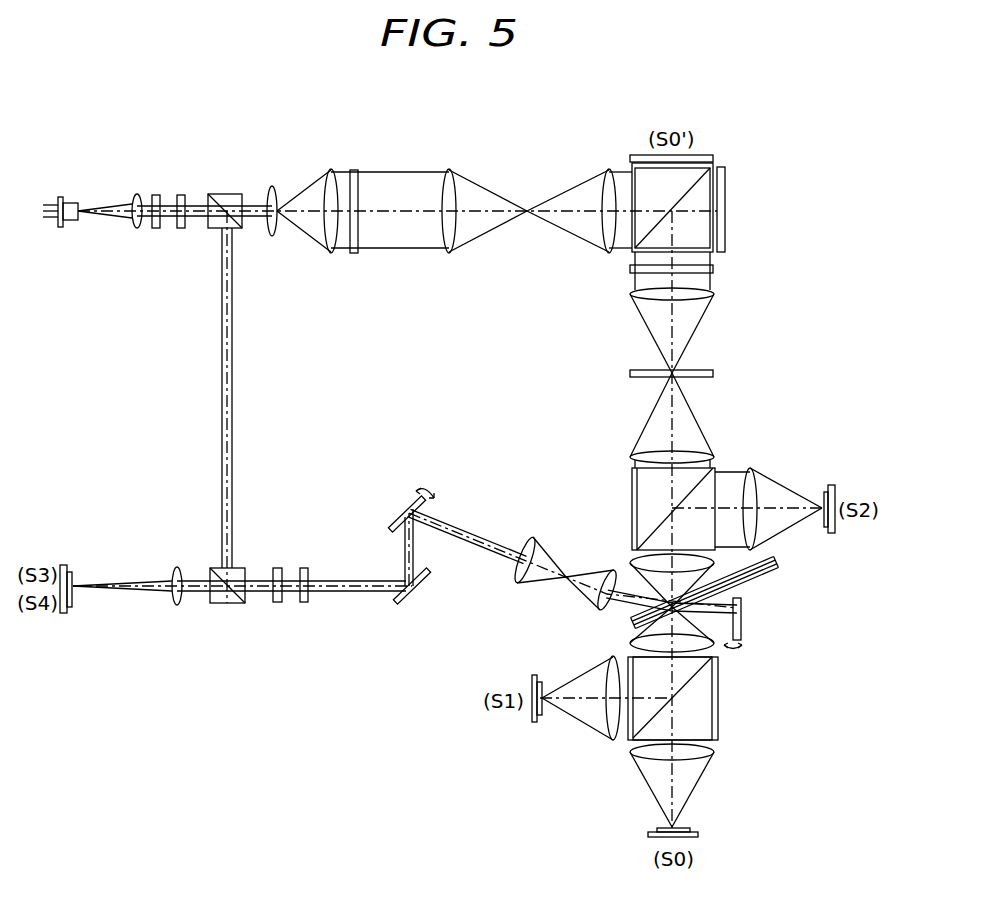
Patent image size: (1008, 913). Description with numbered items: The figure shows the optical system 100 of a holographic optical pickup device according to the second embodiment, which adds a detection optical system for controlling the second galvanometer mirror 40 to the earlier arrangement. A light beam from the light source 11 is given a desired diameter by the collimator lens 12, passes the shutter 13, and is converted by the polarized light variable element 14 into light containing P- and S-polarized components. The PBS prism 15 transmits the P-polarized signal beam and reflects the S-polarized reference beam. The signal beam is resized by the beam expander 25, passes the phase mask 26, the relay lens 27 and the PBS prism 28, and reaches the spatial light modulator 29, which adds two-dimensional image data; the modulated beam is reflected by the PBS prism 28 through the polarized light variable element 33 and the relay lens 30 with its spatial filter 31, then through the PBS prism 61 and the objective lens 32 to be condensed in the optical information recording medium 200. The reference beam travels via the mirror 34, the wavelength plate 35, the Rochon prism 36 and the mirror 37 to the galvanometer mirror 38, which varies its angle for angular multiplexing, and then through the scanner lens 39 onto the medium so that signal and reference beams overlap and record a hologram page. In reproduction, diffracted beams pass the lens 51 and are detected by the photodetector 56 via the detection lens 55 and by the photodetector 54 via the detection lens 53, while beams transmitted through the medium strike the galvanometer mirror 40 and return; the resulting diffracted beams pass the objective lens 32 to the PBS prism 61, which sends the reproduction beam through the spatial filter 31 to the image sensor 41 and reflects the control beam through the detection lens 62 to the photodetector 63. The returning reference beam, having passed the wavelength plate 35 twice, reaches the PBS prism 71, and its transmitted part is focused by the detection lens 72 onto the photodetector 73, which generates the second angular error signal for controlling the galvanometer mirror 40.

The optical system 100 is at (470, 96).
The light source 11 is at (70, 200).
The collimator lens 12 is at (133, 193).
The shutter 13 is at (156, 193).
The polarized light variable element 14 is at (181, 193).
The polarization beam splitter prism 15 is at (222, 192).
The beam expander 25 is at (335, 167).
The phase mask 26 is at (355, 168).
The relay lens 27 is at (612, 167).
The PBS prism 28 is at (638, 182).
The spatial light modulator 29 is at (727, 195).
The relay lens 30 is at (625, 288).
The spatial filter 31 is at (715, 374).
The objective lens 32 is at (633, 562).
The polarized light variable element 33 is at (713, 268).
The mirror 34 is at (700, 700).
The wavelength plate 35 is at (278, 567).
The Rochon prism 36 is at (305, 567).
The mirror 37 is at (423, 593).
The galvanometer mirror 38 is at (403, 512).
The scanner lens 39 is at (602, 619).
The galvanometer mirror 40 is at (742, 613).
The image sensor 41 is at (707, 155).
The lens 51 is at (632, 645).
The detection lens 53 is at (613, 740).
The photodetector 54 is at (533, 723).
The detection lens 55 is at (647, 757).
The photodetector 56 is at (700, 832).
The PBS prism 61 is at (642, 498).
The detection lens 62 is at (748, 470).
The photodetector 63 is at (832, 485).
The PBS prism 71 is at (237, 567).
The detection lens 72 is at (175, 567).
The photodetector 73 is at (65, 565).
The optical information recording medium 200 is at (778, 560).